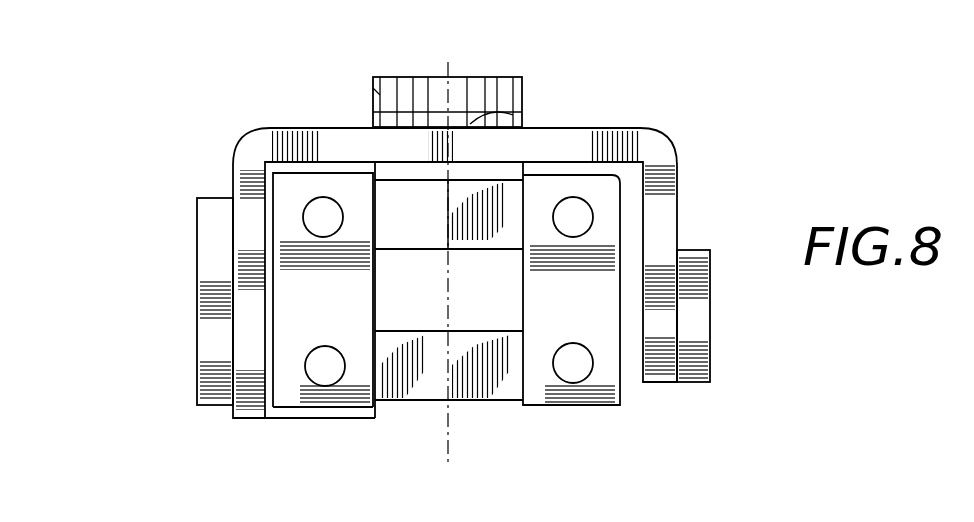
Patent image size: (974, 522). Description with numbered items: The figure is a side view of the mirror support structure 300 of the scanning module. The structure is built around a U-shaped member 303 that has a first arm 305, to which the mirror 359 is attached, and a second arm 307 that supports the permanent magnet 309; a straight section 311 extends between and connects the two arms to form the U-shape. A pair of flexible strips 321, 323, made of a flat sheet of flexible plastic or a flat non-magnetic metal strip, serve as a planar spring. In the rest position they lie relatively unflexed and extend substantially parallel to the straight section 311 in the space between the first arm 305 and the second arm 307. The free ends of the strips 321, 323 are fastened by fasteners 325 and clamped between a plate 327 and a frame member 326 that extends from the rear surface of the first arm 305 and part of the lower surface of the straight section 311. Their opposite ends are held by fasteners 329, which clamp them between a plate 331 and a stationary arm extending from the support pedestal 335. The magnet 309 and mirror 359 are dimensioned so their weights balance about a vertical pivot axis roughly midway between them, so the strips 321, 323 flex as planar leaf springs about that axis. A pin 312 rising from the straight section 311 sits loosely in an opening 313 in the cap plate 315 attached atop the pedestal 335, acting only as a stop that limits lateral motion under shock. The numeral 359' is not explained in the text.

The mirror support structure 300 is at (628, 107).
The U-shaped member 303 is at (672, 140).
The first arm 305 is at (247, 338).
The second arm 307 is at (662, 383).
The permanent magnet 309 is at (712, 300).
The straight section 311 is at (283, 127).
The pin 312 is at (522, 122).
The opening 313 is at (373, 108).
The cap plate 315 is at (511, 77).
The flexible strip 321 is at (412, 250).
The flexible strip 323 is at (460, 402).
The fasteners 325 is at (333, 387).
The frame member 326 is at (298, 420).
The plate 327 is at (283, 238).
The fasteners 329 is at (593, 212).
The plate 331 is at (547, 407).
The support pedestal 335 is at (372, 116).
The mirror 359 is at (165, 292).
The mounting bracket (second) 359' is at (196, 516).